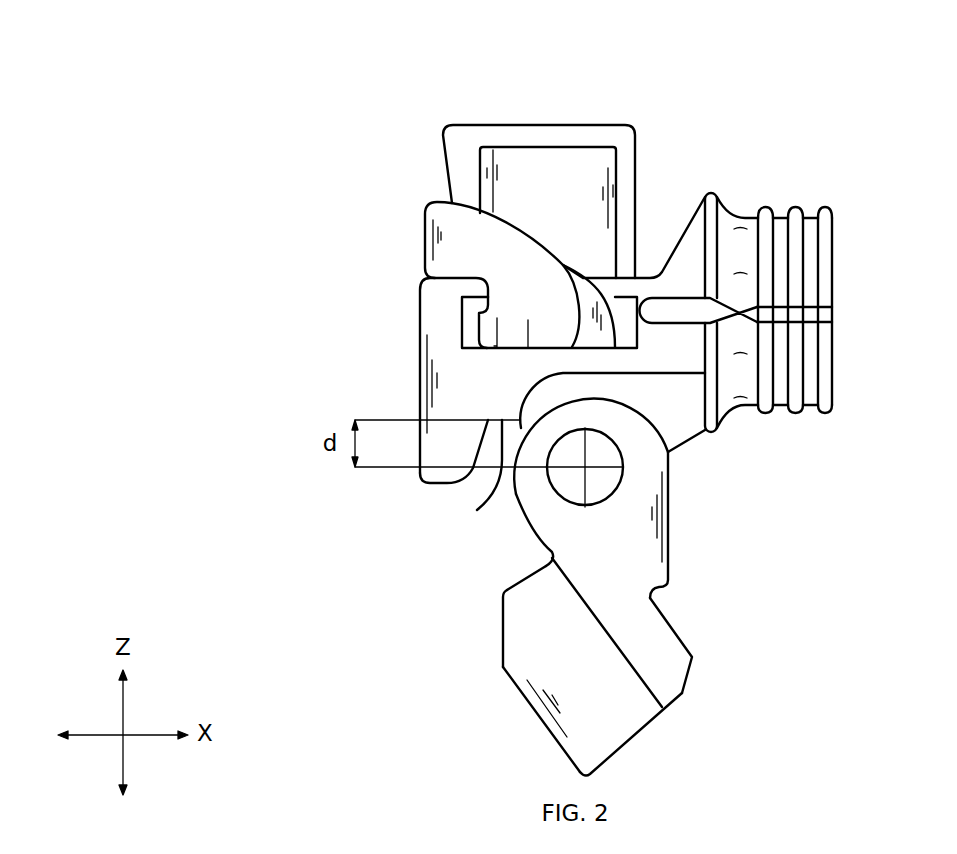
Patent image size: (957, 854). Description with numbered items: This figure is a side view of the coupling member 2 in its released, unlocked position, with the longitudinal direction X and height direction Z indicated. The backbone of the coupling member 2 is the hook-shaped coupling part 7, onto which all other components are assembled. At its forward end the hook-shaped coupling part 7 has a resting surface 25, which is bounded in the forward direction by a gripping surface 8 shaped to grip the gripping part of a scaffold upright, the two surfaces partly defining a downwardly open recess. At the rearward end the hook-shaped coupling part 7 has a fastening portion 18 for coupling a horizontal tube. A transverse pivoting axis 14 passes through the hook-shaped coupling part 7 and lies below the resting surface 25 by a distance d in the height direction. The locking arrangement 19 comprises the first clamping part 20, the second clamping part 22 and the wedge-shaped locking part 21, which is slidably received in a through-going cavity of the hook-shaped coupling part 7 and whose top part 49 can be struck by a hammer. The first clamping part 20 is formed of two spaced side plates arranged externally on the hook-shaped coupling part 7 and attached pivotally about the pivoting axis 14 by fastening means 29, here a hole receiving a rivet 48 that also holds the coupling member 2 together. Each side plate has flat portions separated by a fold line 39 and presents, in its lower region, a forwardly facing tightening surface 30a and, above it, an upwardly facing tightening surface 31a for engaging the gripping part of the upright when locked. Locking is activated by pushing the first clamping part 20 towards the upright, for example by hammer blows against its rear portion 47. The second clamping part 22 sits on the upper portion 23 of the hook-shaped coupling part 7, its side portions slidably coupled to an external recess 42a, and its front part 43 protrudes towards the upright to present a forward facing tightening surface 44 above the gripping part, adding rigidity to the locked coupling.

The coupling member 2 is at (711, 89).
The hook-shaped coupling part 7 is at (370, 375).
The gripping surface 8 is at (393, 474).
The transverse pivoting axis 14 is at (749, 514).
The fastening portion 18 is at (688, 288).
The locking arrangement 19 is at (550, 416).
The first clamping part 20 is at (468, 614).
The wedge-shaped locking part 21 is at (572, 165).
The second clamping part 22 is at (479, 272).
The upper portion 23 is at (349, 306).
The resting surface 25 is at (394, 493).
The fastening means 29 is at (729, 484).
The forwardly facing tightening surface 30a is at (414, 719).
The upwardly facing tightening surface 31a is at (412, 588).
The fold line 39 is at (734, 659).
The external recess 42a is at (418, 322).
The front part 43 is at (370, 186).
The forward facing tightening surface 44 is at (313, 207).
The rear portion 47 is at (786, 645).
The rivet 48 is at (713, 517).
The top part 49 is at (539, 164).